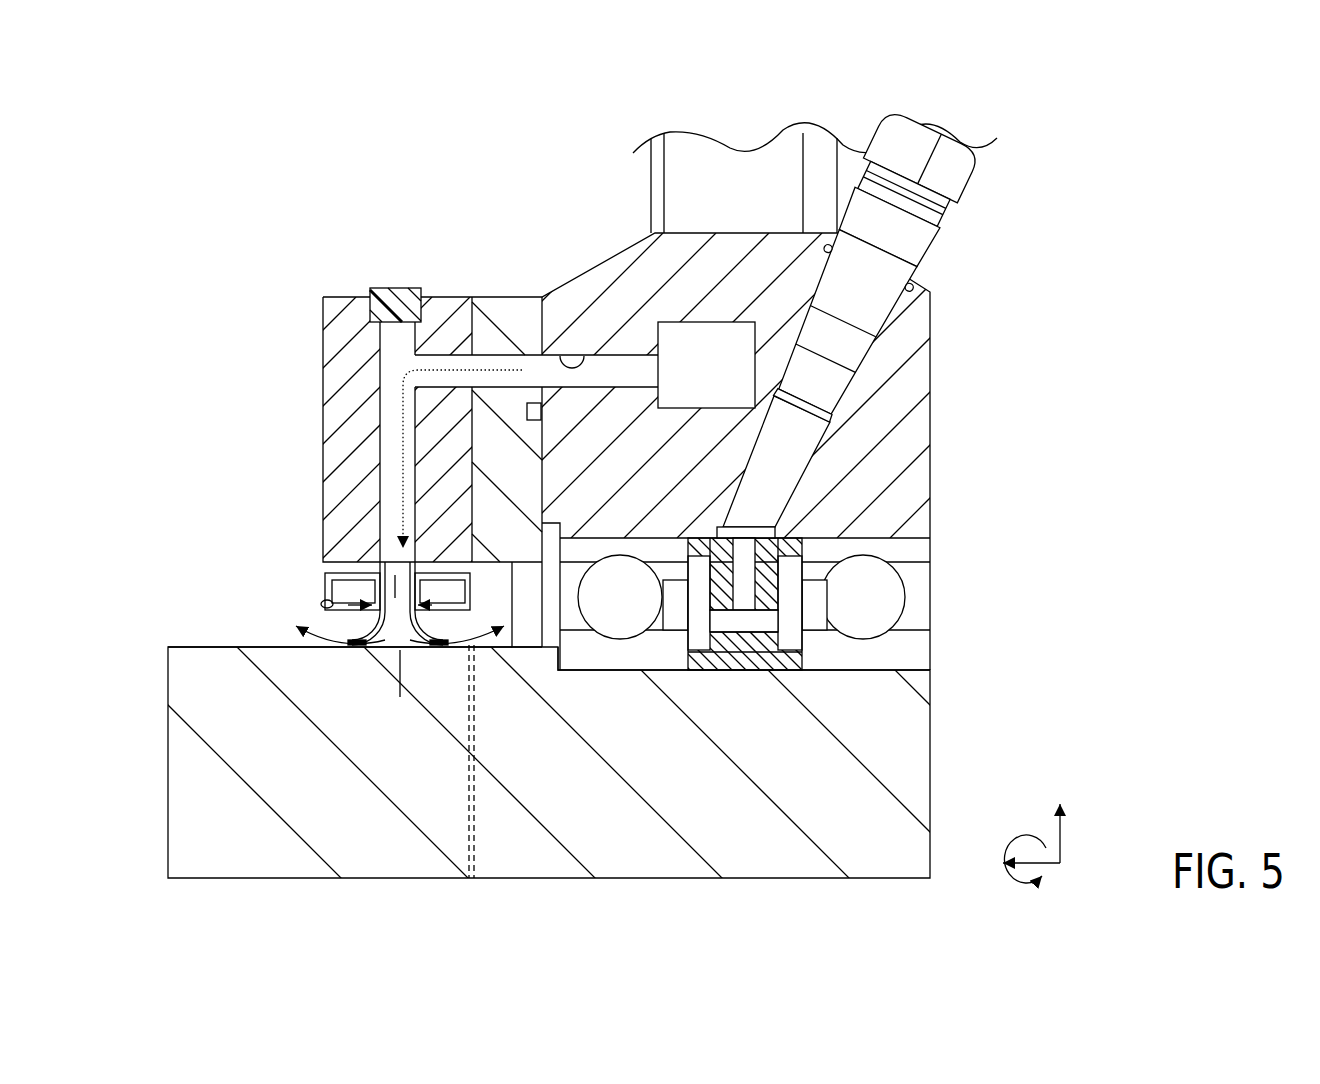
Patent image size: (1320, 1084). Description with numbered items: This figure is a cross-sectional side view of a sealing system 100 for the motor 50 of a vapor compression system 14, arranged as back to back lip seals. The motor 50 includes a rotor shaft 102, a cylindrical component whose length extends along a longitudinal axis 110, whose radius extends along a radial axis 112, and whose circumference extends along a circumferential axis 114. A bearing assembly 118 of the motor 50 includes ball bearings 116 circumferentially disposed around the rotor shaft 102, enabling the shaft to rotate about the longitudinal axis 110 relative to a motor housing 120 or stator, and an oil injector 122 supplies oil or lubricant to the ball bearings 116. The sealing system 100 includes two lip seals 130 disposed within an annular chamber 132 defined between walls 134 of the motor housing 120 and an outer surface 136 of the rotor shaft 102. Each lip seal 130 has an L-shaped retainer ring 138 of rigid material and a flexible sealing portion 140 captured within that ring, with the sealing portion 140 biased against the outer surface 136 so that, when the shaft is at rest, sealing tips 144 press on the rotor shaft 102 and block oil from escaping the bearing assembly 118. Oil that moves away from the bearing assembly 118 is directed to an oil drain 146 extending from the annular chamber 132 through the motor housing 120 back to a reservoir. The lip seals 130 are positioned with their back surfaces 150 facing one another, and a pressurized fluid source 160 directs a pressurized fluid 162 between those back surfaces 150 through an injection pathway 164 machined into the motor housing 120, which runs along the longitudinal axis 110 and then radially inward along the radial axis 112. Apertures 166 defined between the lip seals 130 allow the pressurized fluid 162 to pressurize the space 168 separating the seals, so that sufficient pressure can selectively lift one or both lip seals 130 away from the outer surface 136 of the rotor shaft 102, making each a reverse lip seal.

The vapor compression system 14 is at (734, 98).
The motor 50 is at (605, 112).
The sealing system 100 is at (470, 234).
The rotor shaft 102 is at (385, 854).
The longitudinal axis 110 is at (1052, 852).
The radial axis 112 is at (1063, 837).
The circumferential axis 114 is at (1040, 877).
The ball bearings 116 is at (618, 686).
The bearing assembly 118 is at (753, 722).
The motor housing 120 is at (946, 420).
The oil injector 122 is at (860, 383).
The lip seals 130 is at (354, 662).
The annular chamber 132 is at (470, 621).
The walls 134 is at (380, 570).
The outer surface 136 is at (190, 646).
The L-shaped retainer ring 138 is at (400, 691).
The sealing portion 140 is at (376, 652).
The sealing tips 144 is at (372, 638).
The oil drain 146 is at (471, 745).
The back surfaces 150 is at (378, 590).
The pressurized fluid source 160 is at (728, 376).
The pressurized fluid 162 is at (497, 368).
The injection pathway 164 is at (582, 362).
The apertures 166 is at (396, 550).
The space 168 is at (348, 605).